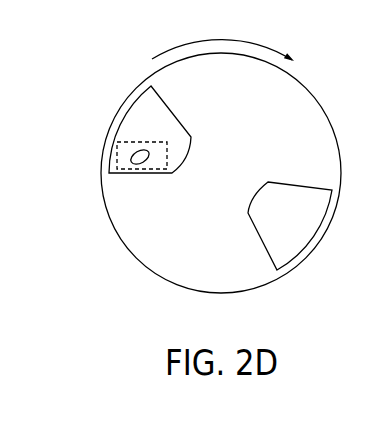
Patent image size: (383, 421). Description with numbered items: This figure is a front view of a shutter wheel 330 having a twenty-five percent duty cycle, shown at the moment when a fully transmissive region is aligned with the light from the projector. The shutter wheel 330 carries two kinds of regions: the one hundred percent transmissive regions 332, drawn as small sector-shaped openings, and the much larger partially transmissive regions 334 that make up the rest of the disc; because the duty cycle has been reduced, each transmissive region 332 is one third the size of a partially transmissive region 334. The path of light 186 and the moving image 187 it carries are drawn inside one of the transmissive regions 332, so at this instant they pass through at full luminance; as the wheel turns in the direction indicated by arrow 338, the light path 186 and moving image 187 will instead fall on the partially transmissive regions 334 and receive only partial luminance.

The shutter wheel 330 is at (134, 276).
The 100% transmissive region 332 is at (143, 115).
The partially transmissive region 334 is at (283, 92).
The direction of rotation 338 is at (214, 40).
The path of light 186 is at (125, 141).
The moving image 187 is at (145, 164).